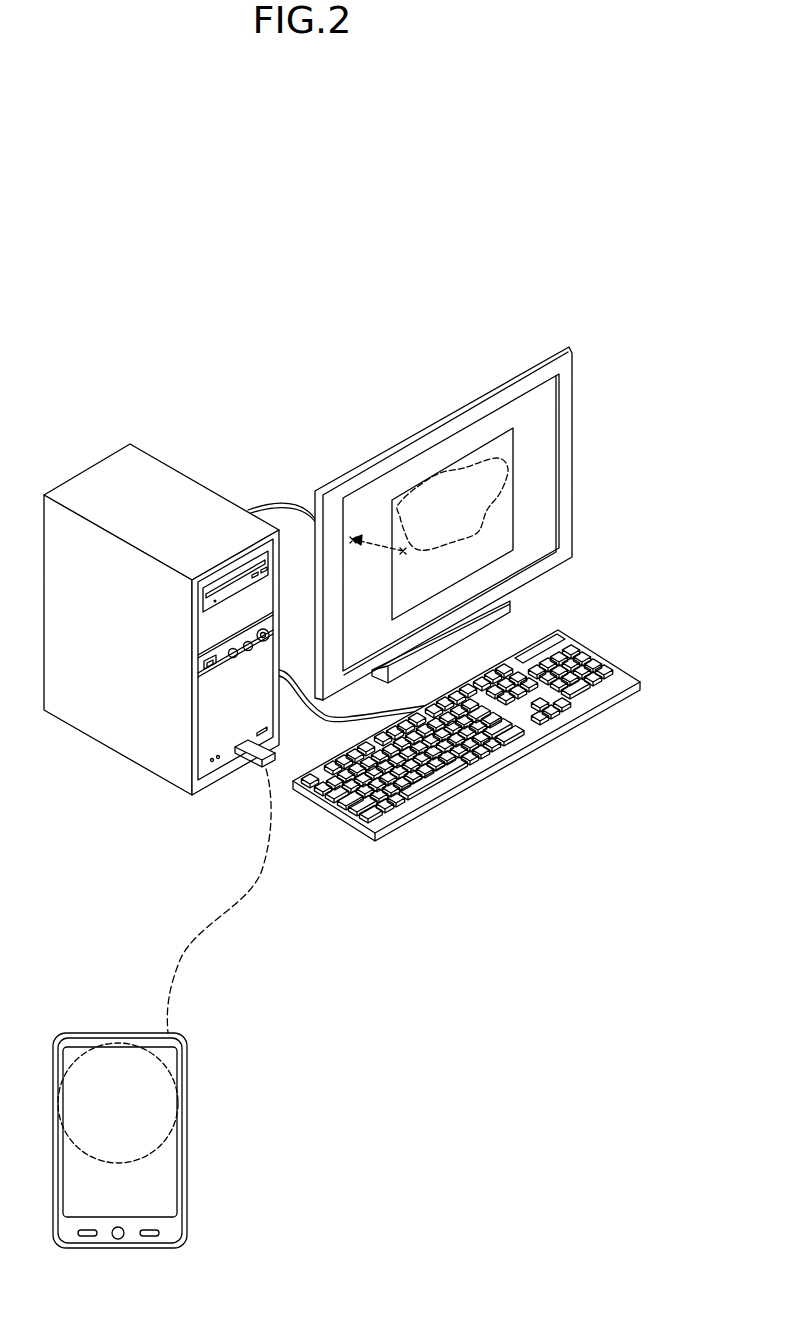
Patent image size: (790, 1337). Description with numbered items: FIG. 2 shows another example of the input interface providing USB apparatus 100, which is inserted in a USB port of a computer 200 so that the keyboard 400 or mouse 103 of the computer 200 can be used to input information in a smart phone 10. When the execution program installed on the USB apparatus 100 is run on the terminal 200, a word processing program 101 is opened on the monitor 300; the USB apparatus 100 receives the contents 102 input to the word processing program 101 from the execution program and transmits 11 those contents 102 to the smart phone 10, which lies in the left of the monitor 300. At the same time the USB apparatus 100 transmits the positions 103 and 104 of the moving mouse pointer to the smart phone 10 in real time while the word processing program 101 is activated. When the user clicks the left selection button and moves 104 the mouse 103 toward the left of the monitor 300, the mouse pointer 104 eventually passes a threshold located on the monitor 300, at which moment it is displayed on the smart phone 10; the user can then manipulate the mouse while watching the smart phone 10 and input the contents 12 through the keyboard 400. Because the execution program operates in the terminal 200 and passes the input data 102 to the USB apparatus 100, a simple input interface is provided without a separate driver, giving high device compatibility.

The smart phone 10 is at (187, 1203).
The transmission of contents 11 is at (172, 1178).
The contents input into the smart phone 12 is at (160, 1053).
The input interface providing USB apparatus 100 is at (249, 766).
The word processing program 101 is at (513, 497).
The contents 102 is at (467, 470).
The mouse 103 is at (417, 550).
The mouse pointer 104 is at (353, 540).
The computer 200 is at (102, 740).
The monitor 300 is at (572, 523).
The keyboard 400 is at (453, 796).